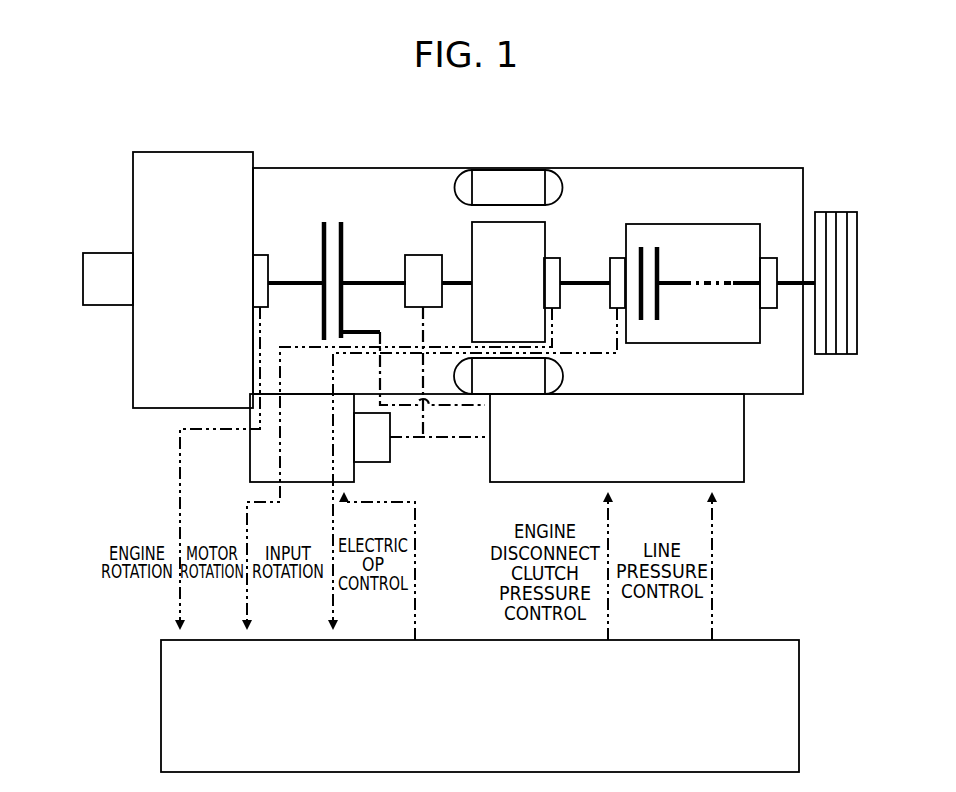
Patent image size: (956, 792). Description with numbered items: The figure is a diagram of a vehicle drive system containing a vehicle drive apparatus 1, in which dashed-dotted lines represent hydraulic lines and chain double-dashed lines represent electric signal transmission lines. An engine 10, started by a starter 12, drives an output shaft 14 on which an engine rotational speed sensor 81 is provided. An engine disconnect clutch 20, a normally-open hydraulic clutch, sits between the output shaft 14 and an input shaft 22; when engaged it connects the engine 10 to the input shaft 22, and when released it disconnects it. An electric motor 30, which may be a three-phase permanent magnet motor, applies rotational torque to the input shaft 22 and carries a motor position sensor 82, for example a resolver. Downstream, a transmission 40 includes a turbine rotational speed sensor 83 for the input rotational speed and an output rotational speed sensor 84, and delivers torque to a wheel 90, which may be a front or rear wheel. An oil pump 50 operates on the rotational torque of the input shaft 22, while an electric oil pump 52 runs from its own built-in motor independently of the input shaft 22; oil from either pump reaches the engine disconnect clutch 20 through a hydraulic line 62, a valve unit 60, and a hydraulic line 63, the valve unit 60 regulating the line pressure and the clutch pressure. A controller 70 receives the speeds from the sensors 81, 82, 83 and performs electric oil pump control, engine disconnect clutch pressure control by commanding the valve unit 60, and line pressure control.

The vehicle drive apparatus 1 is at (70, 492).
The engine 10 is at (133, 382).
The starter 12 is at (110, 305).
The output shaft 14 is at (296, 285).
The engine disconnect clutch 20 is at (345, 194).
The input shaft 22 is at (372, 285).
The electric motor 30 is at (573, 194).
The transmission 40 is at (730, 194).
The oil pump 50 is at (416, 255).
The electric oil pump 52 is at (250, 462).
The valve unit 60 is at (744, 447).
The hydraulic line 62 is at (445, 440).
The hydraulic line 63 is at (440, 406).
The controller 70 is at (750, 640).
The engine rotational speed sensor 81 is at (262, 255).
The motor position sensor 82 is at (552, 258).
The turbine rotational speed sensor 83 is at (617, 258).
The output rotational speed sensor 84 is at (768, 310).
The wheel 90 is at (833, 356).